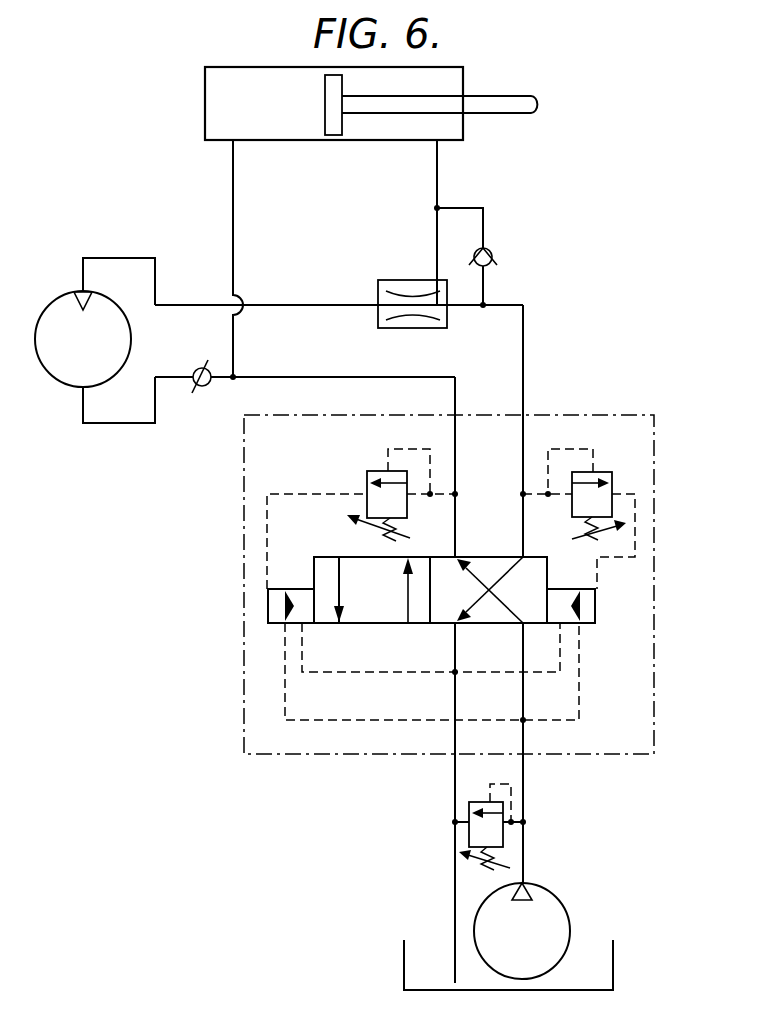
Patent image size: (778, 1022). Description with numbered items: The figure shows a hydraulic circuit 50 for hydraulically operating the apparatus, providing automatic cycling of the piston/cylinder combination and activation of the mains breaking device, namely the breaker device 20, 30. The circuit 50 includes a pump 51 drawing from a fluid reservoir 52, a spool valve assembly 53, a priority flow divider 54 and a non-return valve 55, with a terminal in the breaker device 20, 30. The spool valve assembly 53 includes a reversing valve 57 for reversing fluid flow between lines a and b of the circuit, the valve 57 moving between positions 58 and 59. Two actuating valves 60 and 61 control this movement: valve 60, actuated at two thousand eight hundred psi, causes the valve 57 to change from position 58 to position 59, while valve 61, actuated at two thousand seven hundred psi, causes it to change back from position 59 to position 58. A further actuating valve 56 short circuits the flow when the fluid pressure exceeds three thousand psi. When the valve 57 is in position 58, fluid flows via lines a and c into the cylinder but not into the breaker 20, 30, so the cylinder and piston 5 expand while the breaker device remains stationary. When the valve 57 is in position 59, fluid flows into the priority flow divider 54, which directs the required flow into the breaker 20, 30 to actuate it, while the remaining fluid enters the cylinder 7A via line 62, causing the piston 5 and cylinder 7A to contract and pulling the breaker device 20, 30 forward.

The piston 5 is at (494, 101).
The cylinder 7A is at (296, 119).
The breaker device 20 is at (95, 340).
The breaker device 30 is at (119, 361).
The hydraulic circuit 50 is at (594, 292).
The pump 51 is at (541, 946).
The fluid reservoir 52 is at (600, 961).
The spool valve assembly 53 is at (578, 432).
The priority flow divider 54 is at (395, 280).
The non-return valve 55 is at (192, 393).
The actuating valve 56 is at (496, 836).
The reversing valve 57 is at (431, 622).
The valve position 58 is at (490, 572).
The valve position 59 is at (395, 602).
The actuating valve 60 is at (378, 490).
The actuating valve 61 is at (595, 474).
The line 62 is at (440, 178).
The line a is at (290, 376).
The line b is at (270, 305).
The line c is at (238, 263).